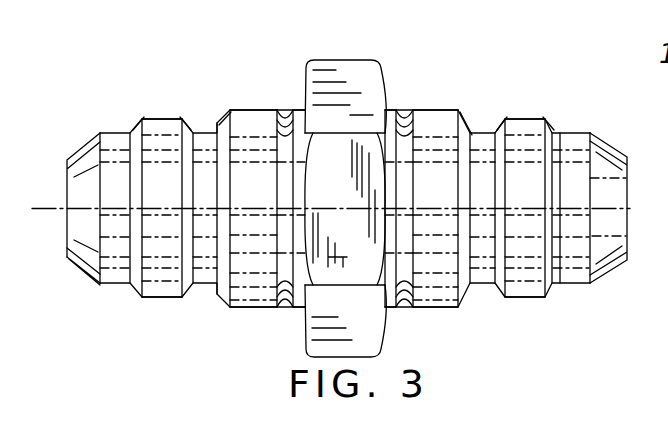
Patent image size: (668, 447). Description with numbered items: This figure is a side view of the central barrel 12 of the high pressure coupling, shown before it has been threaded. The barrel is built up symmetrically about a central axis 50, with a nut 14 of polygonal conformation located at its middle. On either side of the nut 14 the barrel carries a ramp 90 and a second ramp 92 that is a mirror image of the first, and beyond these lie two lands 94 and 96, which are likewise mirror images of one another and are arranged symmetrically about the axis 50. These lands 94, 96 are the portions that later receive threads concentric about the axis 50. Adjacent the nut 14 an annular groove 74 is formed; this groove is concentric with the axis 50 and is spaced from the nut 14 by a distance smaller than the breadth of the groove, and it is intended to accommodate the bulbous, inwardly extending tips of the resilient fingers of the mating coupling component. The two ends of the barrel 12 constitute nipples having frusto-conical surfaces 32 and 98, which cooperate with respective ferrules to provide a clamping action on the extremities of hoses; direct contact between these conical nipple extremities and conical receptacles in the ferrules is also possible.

The central barrel 12 is at (388, 108).
The nut 14 is at (337, 60).
The frusto-conical surface 32 is at (82, 278).
The axis 50 is at (60, 207).
The annular groove 74 is at (288, 110).
The ramp 90 is at (247, 110).
The ramp 92 is at (430, 108).
The land 94 is at (175, 94).
The land 96 is at (538, 120).
The frusto-conical surface 98 is at (608, 274).